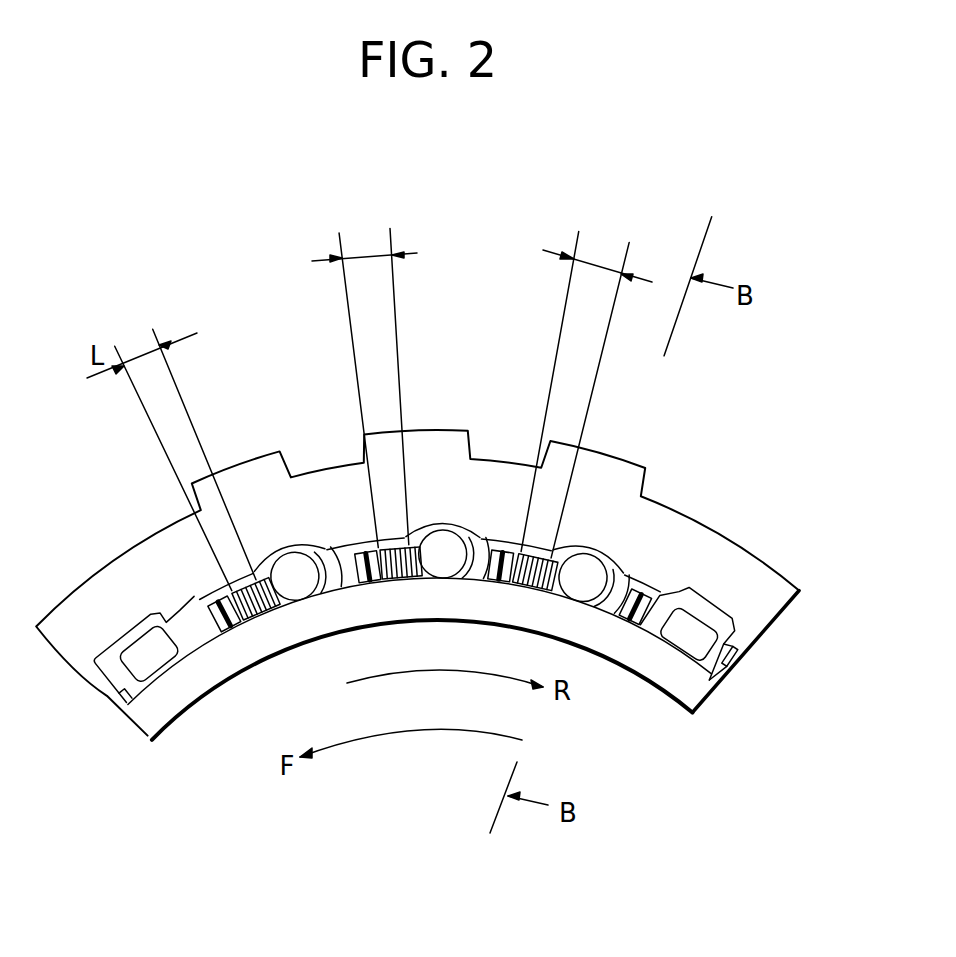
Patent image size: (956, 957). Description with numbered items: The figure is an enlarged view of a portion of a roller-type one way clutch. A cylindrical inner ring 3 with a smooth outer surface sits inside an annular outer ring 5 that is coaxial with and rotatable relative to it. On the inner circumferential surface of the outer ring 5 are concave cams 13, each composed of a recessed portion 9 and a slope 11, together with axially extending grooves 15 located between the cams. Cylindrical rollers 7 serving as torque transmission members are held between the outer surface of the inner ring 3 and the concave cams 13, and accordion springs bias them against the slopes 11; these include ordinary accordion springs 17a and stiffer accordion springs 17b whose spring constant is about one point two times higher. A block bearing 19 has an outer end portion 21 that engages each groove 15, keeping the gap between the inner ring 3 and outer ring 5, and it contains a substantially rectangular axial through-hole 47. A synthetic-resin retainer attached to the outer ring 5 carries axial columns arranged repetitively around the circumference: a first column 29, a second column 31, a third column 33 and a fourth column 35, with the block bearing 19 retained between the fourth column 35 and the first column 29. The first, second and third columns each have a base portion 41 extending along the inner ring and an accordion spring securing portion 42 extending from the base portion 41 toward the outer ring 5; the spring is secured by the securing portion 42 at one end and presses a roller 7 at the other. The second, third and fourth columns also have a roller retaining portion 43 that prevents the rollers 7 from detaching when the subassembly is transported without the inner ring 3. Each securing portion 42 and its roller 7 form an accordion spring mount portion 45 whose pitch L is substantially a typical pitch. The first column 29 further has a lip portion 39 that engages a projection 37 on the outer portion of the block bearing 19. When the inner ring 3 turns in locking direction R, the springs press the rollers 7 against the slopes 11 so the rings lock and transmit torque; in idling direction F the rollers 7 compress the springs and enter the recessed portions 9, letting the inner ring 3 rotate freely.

The inner ring 3 is at (158, 708).
The outer ring 5 is at (97, 602).
The roller 7 is at (262, 605).
The recessed portion 9 is at (453, 530).
The slope 11 is at (485, 535).
The concave cam 13 is at (423, 523).
The groove 15 is at (723, 613).
The accordion spring 17a is at (278, 606).
The accordion spring 17b is at (388, 545).
The block bearing 19 is at (683, 662).
The outer end portion 21 is at (698, 602).
The first column 29 is at (200, 613).
The second column 31 is at (293, 565).
The third column 33 is at (492, 578).
The fourth column 35 is at (634, 597).
The projection 37 is at (740, 640).
The lip portion 39 is at (738, 664).
The base portion 41 is at (214, 637).
The accordion spring securing portion 42 is at (250, 612).
The roller retaining portion 43 is at (347, 572).
The accordion spring mount portion 45 is at (369, 399).
The through-hole 47 is at (725, 675).